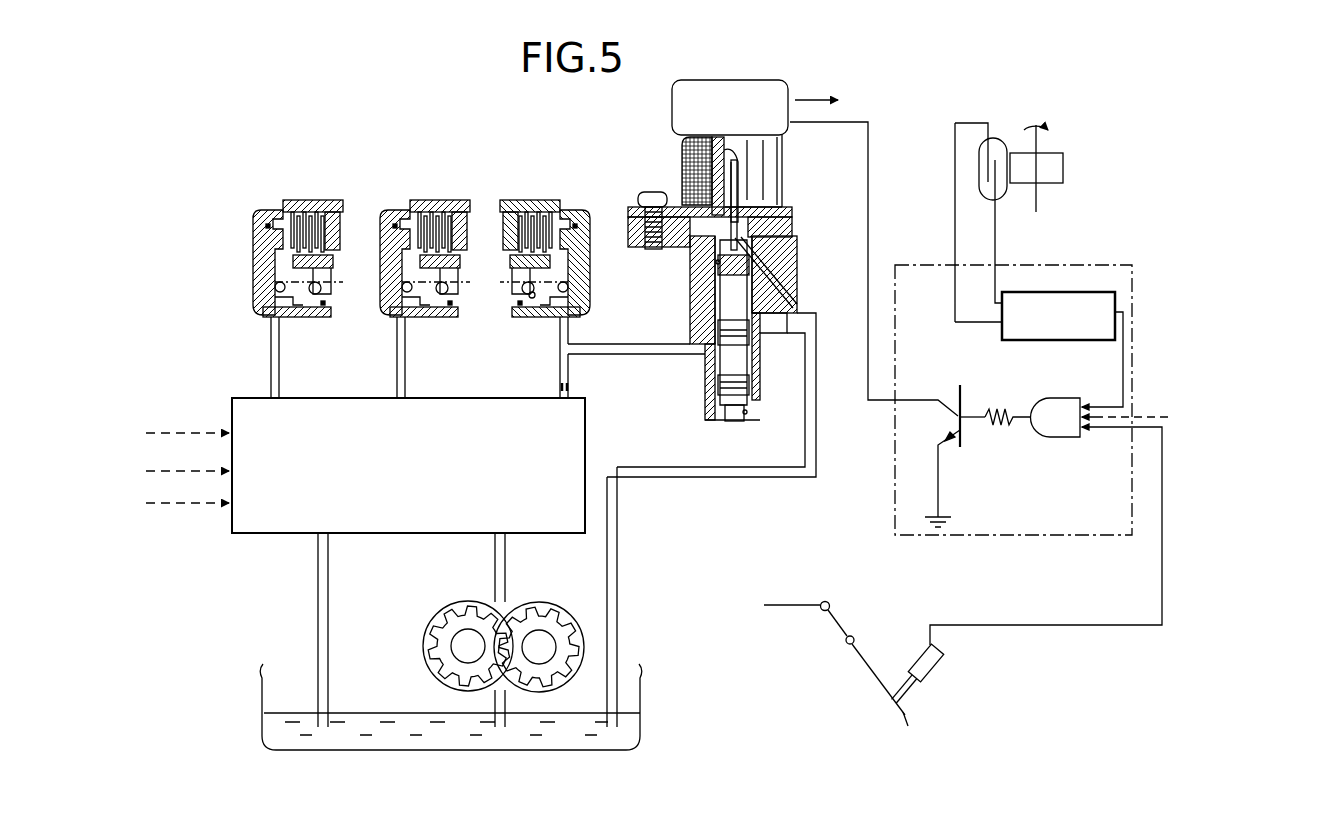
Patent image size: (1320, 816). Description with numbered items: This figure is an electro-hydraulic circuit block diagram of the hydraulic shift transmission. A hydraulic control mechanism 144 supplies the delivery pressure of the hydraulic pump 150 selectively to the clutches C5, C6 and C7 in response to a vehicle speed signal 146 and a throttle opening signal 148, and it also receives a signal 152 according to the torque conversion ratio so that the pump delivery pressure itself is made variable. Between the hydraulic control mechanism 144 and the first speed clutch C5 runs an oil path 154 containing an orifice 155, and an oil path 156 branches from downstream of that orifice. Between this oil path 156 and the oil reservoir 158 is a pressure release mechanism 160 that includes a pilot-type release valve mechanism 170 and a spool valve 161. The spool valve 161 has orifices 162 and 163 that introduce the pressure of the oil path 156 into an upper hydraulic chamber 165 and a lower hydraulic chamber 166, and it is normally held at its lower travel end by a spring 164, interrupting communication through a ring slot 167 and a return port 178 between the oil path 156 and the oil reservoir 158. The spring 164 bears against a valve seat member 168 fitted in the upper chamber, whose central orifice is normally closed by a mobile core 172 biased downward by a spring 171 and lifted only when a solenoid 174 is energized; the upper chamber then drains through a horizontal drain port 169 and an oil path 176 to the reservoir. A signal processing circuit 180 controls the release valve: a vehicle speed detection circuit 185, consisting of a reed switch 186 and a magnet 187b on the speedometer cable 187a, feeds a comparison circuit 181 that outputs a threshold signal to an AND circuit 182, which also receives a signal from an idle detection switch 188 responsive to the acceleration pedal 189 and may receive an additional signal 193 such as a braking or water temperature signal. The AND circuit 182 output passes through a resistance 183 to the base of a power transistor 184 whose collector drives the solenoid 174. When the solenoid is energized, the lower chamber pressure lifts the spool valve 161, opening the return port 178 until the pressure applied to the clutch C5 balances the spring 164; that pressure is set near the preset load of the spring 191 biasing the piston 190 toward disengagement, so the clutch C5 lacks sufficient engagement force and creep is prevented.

The first speed clutch C5 is at (523, 196).
The clutch C6 is at (432, 197).
The clutch C7 is at (320, 198).
The hydraulic control mechanism 144 is at (421, 534).
The vehicle speed signal 146 is at (165, 434).
The throttle opening signal 148 is at (165, 472).
The hydraulic pump 150 is at (556, 604).
The signal according to torque conversion ratio 152 is at (165, 504).
The oil path 154 is at (560, 347).
The orifice 155 is at (561, 386).
The oil path 156 is at (622, 355).
The oil reservoir 158 is at (640, 712).
The pressure release mechanism 160 is at (723, 278).
The spool valve 161 is at (712, 413).
The orifice 162 is at (716, 336).
The orifice 163 is at (712, 386).
The spring 164 is at (716, 292).
The upper hydraulic chamber 165 is at (793, 303).
The lower hydraulic chamber 166 is at (713, 262).
The ring slot 167 is at (748, 392).
The valve seat member 168 is at (790, 214).
The horizontal drain port 169 is at (790, 234).
The release valve mechanism 170 is at (742, 156).
The spring 171 is at (706, 186).
The mobile core 172 is at (736, 185).
The solenoid 174 is at (684, 160).
The oil path 176 is at (778, 270).
The return port 178 is at (748, 345).
The signal processing circuit 180 is at (1170, 279).
The comparison circuit 181 is at (1046, 340).
The AND circuit 182 is at (1058, 438).
The resistance 183 is at (993, 408).
The power transistor 184 is at (956, 406).
The vehicle speed detection circuit 185 is at (1068, 158).
The reed switch 186 is at (998, 138).
The speedometer cable 187a is at (1040, 203).
The magnet 187b is at (1063, 168).
The idle detection switch 188 is at (920, 668).
The acceleration pedal 189 is at (866, 662).
The piston 190 is at (640, 240).
The spring 191 is at (528, 296).
The additional signal 193 is at (1158, 418).